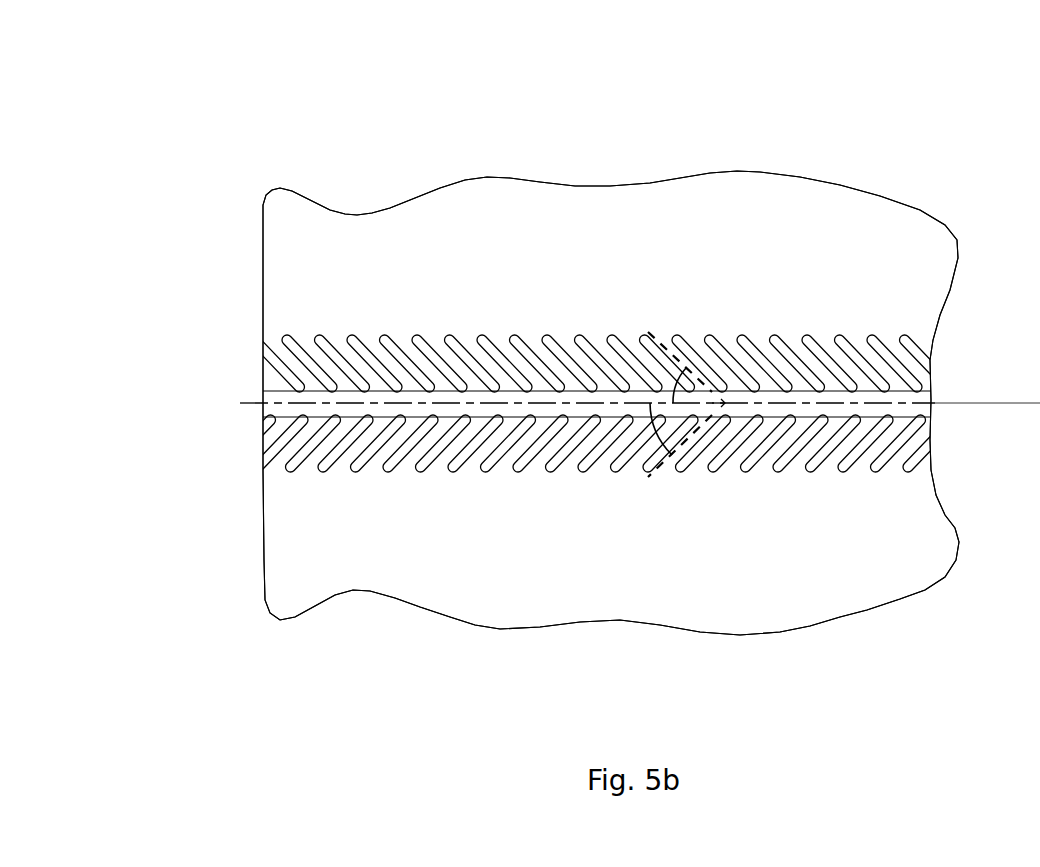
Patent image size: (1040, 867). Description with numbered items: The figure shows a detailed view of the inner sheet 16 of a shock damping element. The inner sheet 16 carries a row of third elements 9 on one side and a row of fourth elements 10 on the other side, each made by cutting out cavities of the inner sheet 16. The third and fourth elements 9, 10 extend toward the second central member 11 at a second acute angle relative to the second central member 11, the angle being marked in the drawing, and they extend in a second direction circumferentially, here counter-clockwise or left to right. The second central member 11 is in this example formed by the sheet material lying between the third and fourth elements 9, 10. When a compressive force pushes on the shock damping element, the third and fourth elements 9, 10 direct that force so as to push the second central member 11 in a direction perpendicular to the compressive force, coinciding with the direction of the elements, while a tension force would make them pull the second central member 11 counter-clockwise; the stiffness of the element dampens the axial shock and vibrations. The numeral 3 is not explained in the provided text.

The pump body / housing 3 is at (203, 501).
The inner sheet 16 is at (224, 140).
The third elements 9 is at (539, 340).
The fourth elements 10 is at (581, 456).
The second central member 11 is at (459, 416).